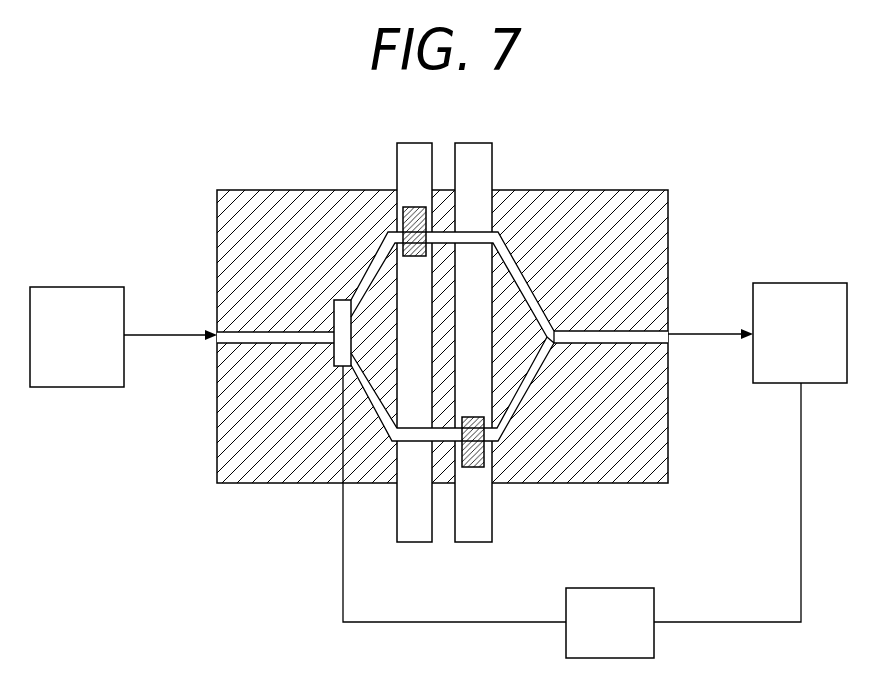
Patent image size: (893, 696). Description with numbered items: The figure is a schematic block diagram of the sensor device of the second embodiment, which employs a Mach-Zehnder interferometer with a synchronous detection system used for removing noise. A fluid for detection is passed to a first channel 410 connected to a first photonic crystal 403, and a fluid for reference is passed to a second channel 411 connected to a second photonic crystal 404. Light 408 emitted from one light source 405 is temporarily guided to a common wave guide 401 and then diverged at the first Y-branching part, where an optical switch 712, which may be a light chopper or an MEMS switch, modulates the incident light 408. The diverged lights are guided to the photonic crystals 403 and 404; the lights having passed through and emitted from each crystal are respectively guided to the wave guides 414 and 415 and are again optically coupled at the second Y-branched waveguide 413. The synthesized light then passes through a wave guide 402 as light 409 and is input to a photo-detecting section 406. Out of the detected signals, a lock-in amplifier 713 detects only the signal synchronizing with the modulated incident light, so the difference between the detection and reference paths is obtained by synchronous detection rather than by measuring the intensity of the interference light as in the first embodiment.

The common wave guide 401 is at (265, 343).
The wave guide 402 is at (650, 335).
The first photonic crystal 403 is at (410, 207).
The second photonic crystal 404 is at (470, 467).
The light source 405 is at (88, 287).
The photo-detecting section 406 is at (818, 283).
The light 408 is at (157, 338).
The light 409 is at (712, 336).
The first channel 410 is at (416, 523).
The second channel 411 is at (481, 165).
The Y-branched waveguide 413 is at (605, 336).
The wave guide 414 is at (522, 270).
The wave guide 415 is at (527, 388).
The optical switch 712 is at (332, 356).
The lock-in amplifier 713 is at (566, 644).